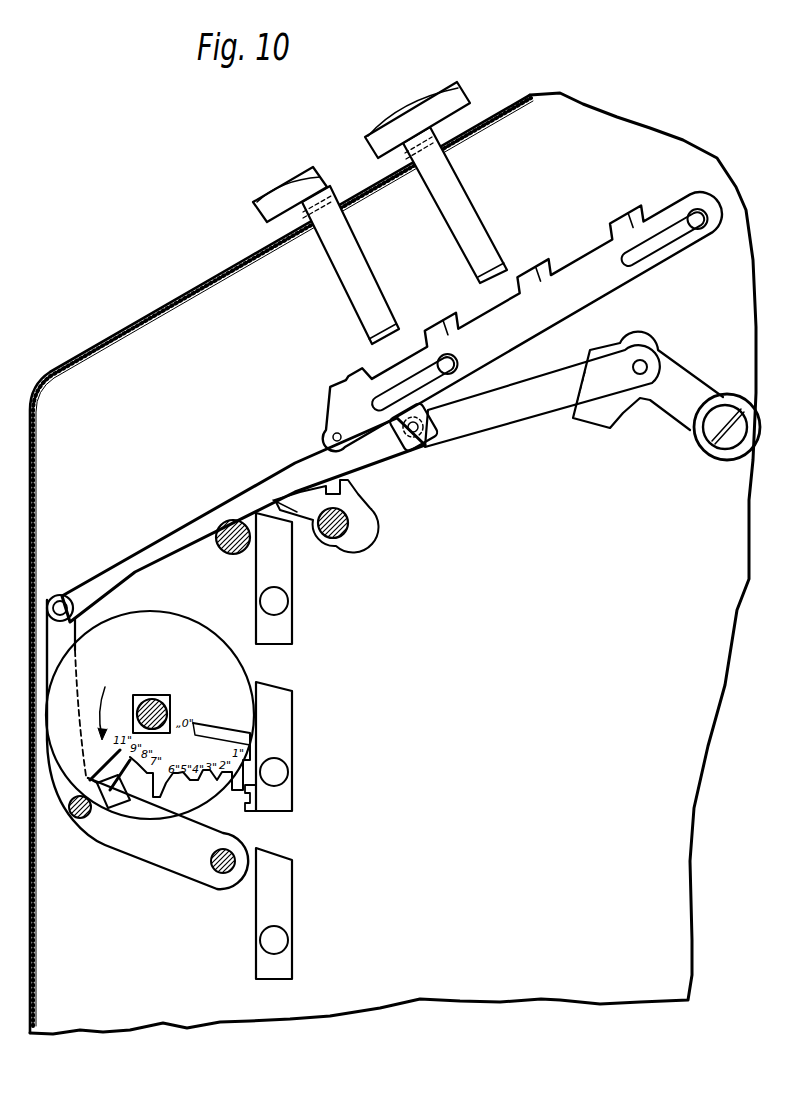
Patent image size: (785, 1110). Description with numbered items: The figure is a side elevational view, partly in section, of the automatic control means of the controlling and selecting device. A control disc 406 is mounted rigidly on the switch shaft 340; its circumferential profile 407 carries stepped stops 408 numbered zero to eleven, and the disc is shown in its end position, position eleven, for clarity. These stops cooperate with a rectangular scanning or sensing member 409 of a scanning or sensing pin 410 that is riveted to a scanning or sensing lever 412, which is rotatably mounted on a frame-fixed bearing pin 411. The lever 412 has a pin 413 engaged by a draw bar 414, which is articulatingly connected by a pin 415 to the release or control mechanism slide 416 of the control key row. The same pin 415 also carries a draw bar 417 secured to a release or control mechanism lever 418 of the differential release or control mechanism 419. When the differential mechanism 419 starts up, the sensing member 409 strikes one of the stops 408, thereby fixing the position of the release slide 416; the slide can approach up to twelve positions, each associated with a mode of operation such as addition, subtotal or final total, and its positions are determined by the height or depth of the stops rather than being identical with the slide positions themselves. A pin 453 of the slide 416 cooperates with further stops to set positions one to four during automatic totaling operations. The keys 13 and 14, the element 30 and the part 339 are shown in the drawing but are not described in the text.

The key 13 is at (280, 210).
The key 14 is at (392, 145).
The pawl plate 30 is at (113, 791).
The shaft 339 is at (165, 717).
The switch shaft 340 is at (163, 697).
The control disc 406 is at (187, 630).
The circumferential profile 407 is at (137, 612).
The stepped stops 408 is at (262, 792).
The scanning or sensing member 409 is at (79, 818).
The scanning or sensing pin 410 is at (88, 810).
The bearing pin 411 is at (217, 873).
The scanning or sensing lever 412 is at (163, 863).
The pin 413 is at (62, 597).
The draw bar 414 is at (128, 555).
The pin 415 is at (420, 450).
The release or control mechanism slide 416 is at (507, 310).
The draw bar 417 is at (532, 403).
The release or control mechanism lever 418 is at (620, 407).
The differential release or control mechanism 419 is at (717, 453).
The pin 453 is at (331, 437).